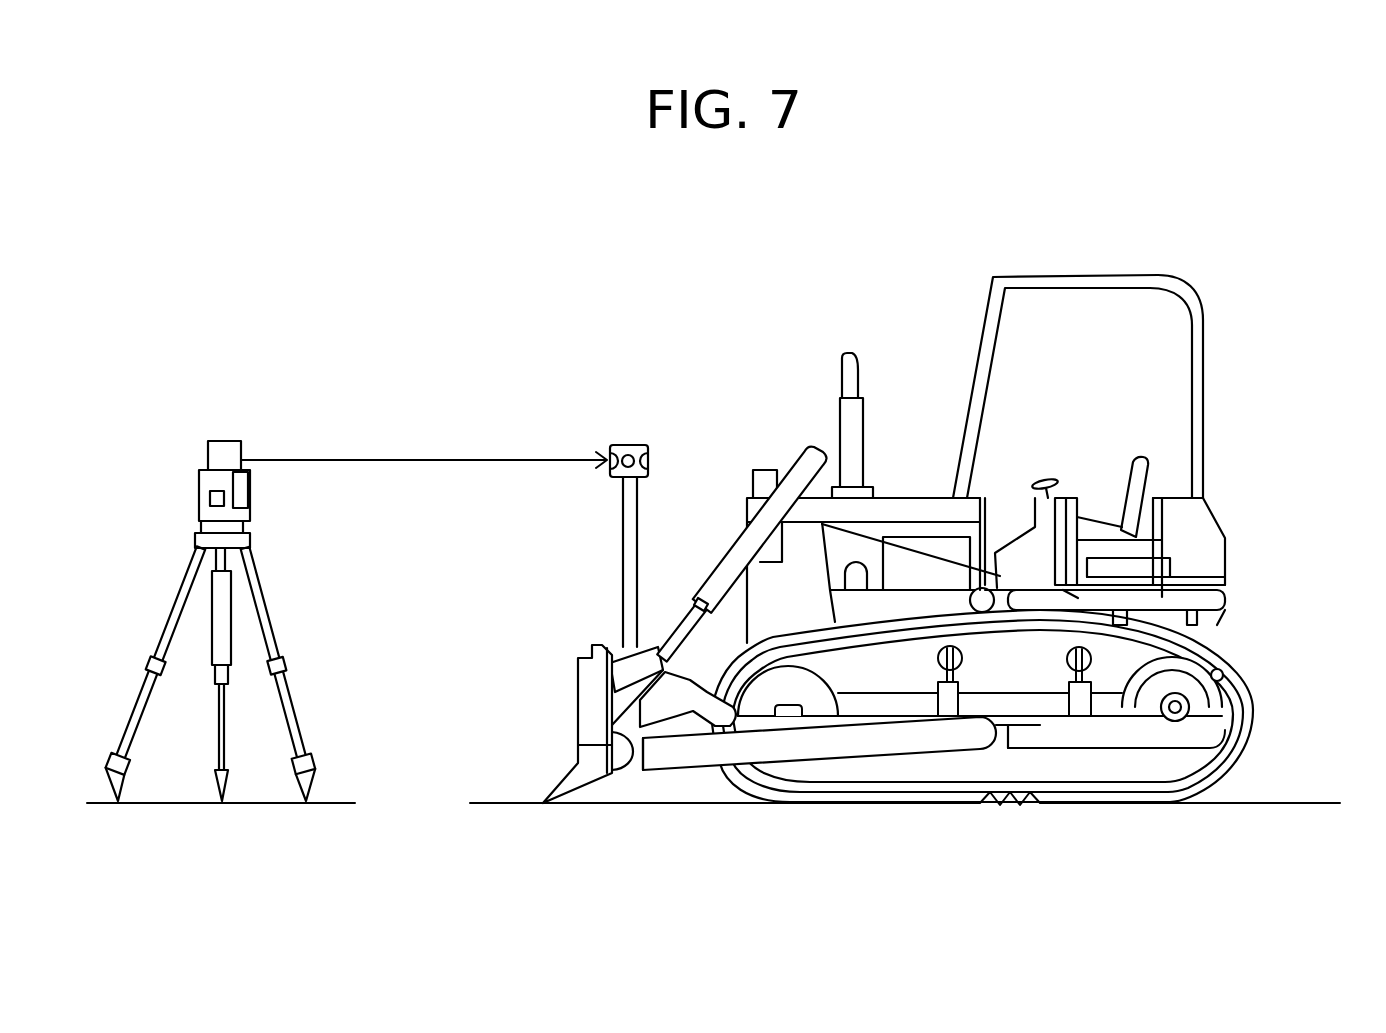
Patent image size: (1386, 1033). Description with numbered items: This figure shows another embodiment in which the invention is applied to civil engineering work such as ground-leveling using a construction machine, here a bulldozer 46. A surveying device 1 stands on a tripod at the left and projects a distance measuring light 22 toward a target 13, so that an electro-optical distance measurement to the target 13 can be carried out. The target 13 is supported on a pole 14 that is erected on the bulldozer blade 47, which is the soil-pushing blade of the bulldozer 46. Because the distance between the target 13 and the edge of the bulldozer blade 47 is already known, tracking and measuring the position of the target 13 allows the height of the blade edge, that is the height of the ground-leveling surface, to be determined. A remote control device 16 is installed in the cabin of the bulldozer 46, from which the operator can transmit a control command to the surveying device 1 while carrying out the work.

The surveying device 1 is at (235, 439).
The distance measuring light 22 is at (407, 460).
The target 13 is at (632, 445).
The pole 14 is at (623, 560).
The bulldozer blade 47 is at (577, 700).
The remote control device 16 is at (1048, 483).
The bulldozer 46 is at (1228, 518).